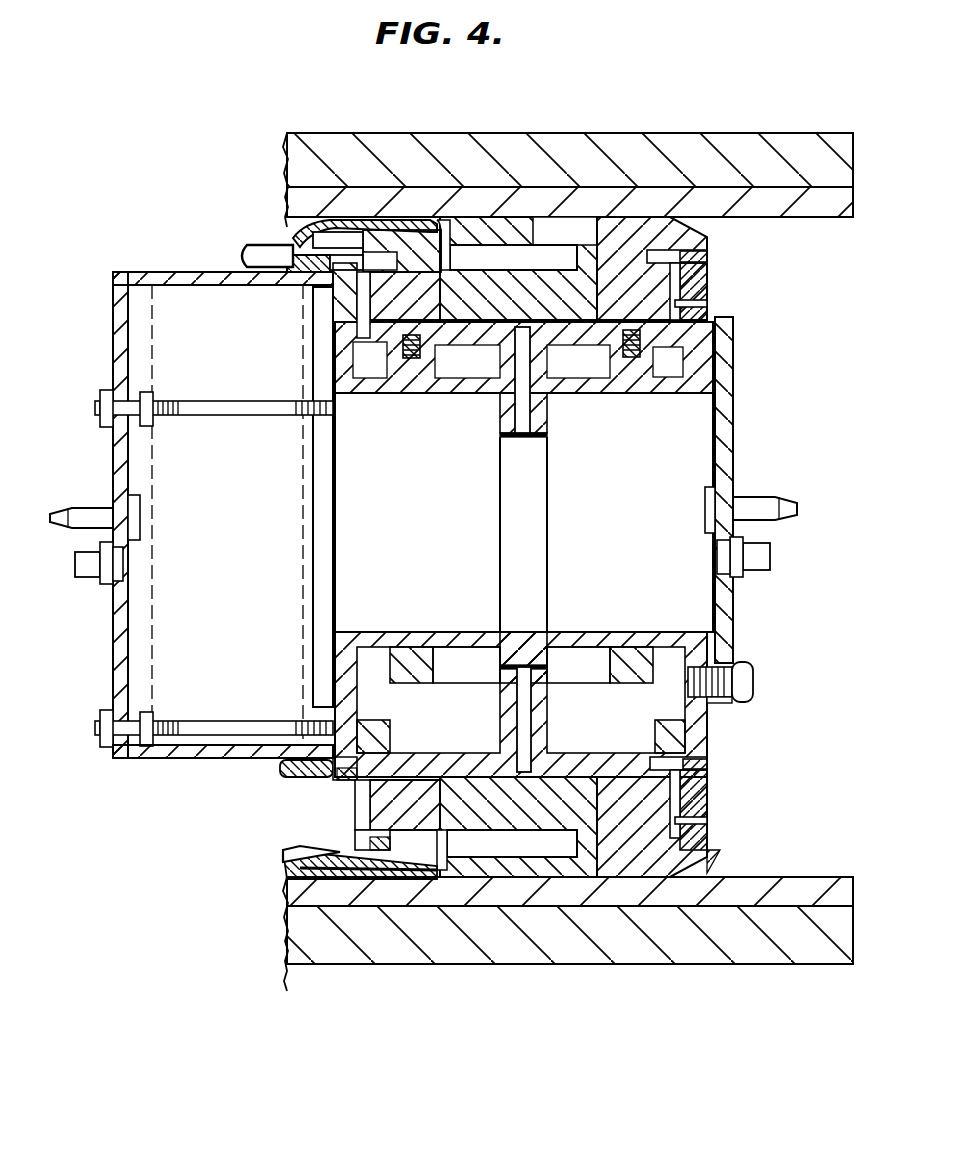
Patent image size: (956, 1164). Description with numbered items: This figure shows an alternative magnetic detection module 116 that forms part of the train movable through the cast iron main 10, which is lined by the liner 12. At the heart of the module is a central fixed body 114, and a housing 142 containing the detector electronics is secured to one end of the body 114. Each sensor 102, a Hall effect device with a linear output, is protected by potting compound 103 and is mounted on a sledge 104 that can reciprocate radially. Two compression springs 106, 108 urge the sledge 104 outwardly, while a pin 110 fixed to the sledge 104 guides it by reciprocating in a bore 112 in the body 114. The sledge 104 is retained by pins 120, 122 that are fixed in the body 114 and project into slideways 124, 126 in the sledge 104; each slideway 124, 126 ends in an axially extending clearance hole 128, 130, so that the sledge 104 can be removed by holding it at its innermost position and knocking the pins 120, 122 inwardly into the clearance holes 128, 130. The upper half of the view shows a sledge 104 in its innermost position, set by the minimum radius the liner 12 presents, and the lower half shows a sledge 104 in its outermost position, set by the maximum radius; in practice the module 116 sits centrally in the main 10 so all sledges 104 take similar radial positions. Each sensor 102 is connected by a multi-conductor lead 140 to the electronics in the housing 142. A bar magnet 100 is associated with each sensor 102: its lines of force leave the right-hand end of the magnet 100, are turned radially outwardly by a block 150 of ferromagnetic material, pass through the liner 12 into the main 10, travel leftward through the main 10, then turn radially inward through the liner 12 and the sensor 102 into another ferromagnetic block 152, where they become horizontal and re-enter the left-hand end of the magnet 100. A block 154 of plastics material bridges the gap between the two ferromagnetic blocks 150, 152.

The cast iron main 10 is at (806, 150).
The liner 12 is at (812, 195).
The bar magnet 100 is at (552, 285).
The sensor 102 is at (398, 290).
The potting compound 103 is at (290, 175).
The sledge 104 is at (690, 283).
The compression spring 106 is at (412, 360).
The compression spring 108 is at (633, 360).
The pin 110 is at (520, 390).
The bore 112 is at (528, 447).
The central fixed body 114 is at (452, 571).
The module 116 is at (240, 775).
The pin 120 is at (300, 237).
The pin 122 is at (690, 257).
The slideway 124 is at (322, 303).
The slideway 126 is at (700, 304).
The clearance hole 128 is at (397, 245).
The clearance hole 130 is at (695, 245).
The multi-conductor lead 140 is at (252, 256).
The housing 142 is at (122, 320).
The block of ferromagnetic material 150 is at (637, 237).
The block of ferromagnetic material 152 is at (446, 238).
The block of plastics material 154 is at (519, 262).